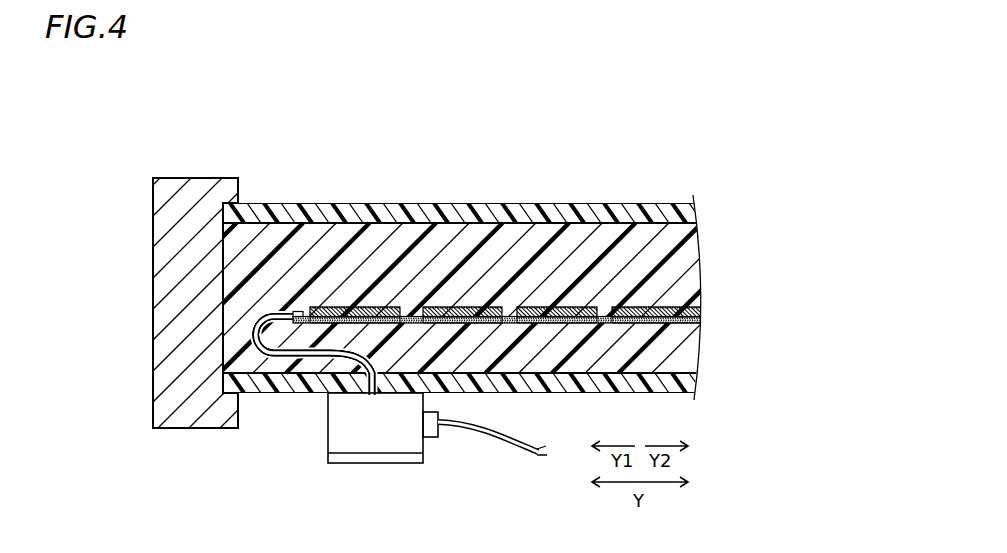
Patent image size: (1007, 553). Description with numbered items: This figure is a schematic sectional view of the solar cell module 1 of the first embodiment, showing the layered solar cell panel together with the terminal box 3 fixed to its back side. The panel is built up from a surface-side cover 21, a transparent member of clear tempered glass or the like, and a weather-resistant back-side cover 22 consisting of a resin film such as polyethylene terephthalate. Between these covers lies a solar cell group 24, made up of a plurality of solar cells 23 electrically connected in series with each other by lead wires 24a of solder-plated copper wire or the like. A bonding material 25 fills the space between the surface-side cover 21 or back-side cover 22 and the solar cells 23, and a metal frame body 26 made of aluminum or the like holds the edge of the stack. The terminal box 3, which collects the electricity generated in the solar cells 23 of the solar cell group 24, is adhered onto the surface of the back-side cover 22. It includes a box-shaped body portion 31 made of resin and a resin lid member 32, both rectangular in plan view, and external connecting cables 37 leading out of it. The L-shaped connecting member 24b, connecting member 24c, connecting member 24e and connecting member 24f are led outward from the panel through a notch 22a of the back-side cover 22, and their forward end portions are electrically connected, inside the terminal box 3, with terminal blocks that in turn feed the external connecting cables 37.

The solar cell module 1 is at (411, 264).
The terminal box 3 is at (357, 453).
The surface-side cover 21 is at (660, 210).
The back-side cover 22 is at (685, 387).
The notch 22a is at (372, 393).
The solar cell 23 is at (341, 307).
The solar cell group 24 is at (714, 309).
The lead wire 24a is at (303, 316).
The L-shaped connecting member 24b is at (278, 313).
The connecting member 24c is at (314, 356).
The connecting member 24e is at (314, 356).
The connecting member 24f is at (314, 356).
The bonding material 25 is at (672, 238).
The metal frame body 26 is at (170, 210).
The body portion 31 is at (334, 432).
The lid member 32 is at (403, 460).
The external connecting cable 37 is at (523, 455).